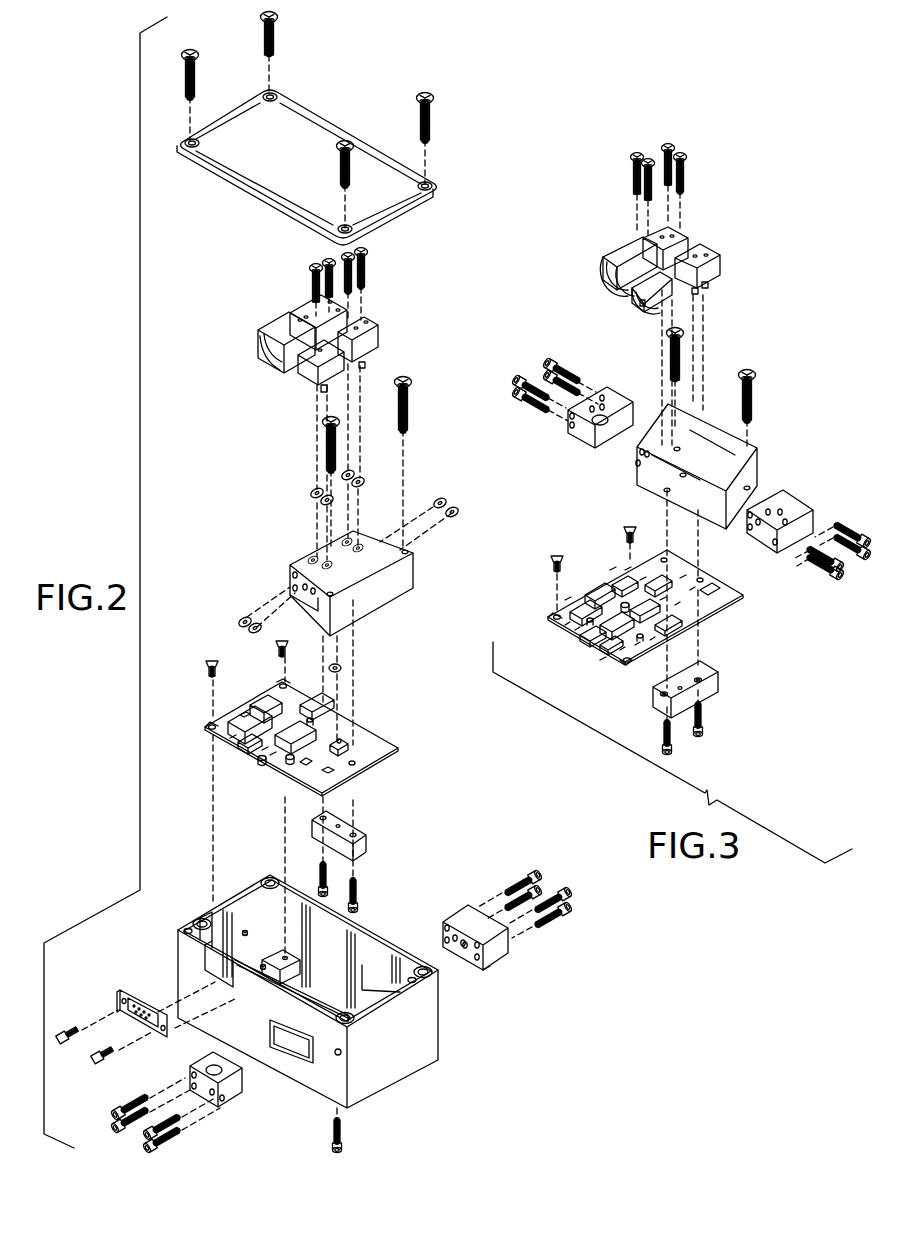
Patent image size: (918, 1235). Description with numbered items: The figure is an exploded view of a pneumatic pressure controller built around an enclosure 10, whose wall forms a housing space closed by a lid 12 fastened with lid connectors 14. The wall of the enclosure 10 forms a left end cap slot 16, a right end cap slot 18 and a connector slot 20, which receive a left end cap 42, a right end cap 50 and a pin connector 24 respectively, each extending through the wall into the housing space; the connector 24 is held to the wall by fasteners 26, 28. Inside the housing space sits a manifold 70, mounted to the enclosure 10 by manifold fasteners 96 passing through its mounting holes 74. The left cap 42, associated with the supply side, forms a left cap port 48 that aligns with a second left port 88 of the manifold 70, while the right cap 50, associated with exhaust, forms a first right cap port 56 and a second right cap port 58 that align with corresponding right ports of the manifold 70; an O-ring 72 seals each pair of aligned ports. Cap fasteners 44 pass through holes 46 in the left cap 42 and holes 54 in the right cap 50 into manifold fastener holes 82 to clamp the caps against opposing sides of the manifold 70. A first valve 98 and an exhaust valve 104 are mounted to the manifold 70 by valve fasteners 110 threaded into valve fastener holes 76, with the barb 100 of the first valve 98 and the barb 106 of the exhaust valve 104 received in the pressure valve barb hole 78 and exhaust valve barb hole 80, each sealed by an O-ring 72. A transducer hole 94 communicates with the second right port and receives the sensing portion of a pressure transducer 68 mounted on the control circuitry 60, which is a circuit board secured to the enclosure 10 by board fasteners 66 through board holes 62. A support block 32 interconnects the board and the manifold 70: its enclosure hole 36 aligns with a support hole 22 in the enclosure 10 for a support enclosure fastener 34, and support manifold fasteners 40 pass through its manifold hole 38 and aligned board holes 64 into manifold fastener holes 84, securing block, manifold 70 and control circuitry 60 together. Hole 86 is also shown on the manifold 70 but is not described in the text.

In FIG. 2, the enclosure 10 is at (308, 991).
In FIG. 2, the lid 12 is at (295, 103).
In FIG. 2, the lid connectors 14 is at (276, 42).
In FIG. 2, the left end cap slot 16 is at (300, 1057).
In FIG. 2, the right end cap slot 18 is at (362, 976).
In FIG. 2, the connector slot 20 is at (236, 985).
In FIG. 2, the support hole 22 is at (344, 1052).
In FIG. 2, the pin connector 24 is at (128, 1023).
In FIG. 2, the fasteners 26 is at (59, 1030).
In FIG. 2, the fasteners 28 is at (222, 912).
In FIG. 2, the support block 32 is at (336, 827).
In FIG. 3, the support block 32 is at (688, 691).
In FIG. 2, the support enclosure fastener 34 is at (343, 1145).
In FIG. 2, the enclosure hole 36 is at (340, 825).
In FIG. 3, the enclosure hole 36 is at (658, 694).
In FIG. 2, the manifold hole 38 is at (318, 820).
In FIG. 3, the manifold hole 38 is at (702, 681).
In FIG. 2, the support manifold fasteners 40 is at (358, 893).
In FIG. 3, the support manifold fasteners 40 is at (704, 734).
In FIG. 2, the left end cap 42 is at (211, 1080).
In FIG. 3, the left end cap 42 is at (582, 419).
In FIG. 2, the cap fasteners 44 is at (138, 1104).
In FIG. 3, the cap fasteners 44 is at (566, 372).
In FIG. 2, the holes 46 is at (192, 1078).
In FIG. 3, the holes 46 is at (570, 418).
In FIG. 2, the left cap port 48 is at (212, 1066).
In FIG. 3, the left cap port 48 is at (608, 412).
In FIG. 2, the right end cap 50 is at (477, 947).
In FIG. 3, the right end cap 50 is at (795, 522).
In FIG. 2, the holes 54 is at (486, 968).
In FIG. 2, the first right cap port 56 is at (467, 948).
In FIG. 3, the first right cap port 56 is at (770, 546).
In FIG. 2, the second right cap port 58 is at (446, 928).
In FIG. 3, the second right cap port 58 is at (752, 515).
In FIG. 2, the control circuitry 60 is at (294, 728).
In FIG. 3, the control circuitry 60 is at (642, 607).
In FIG. 2, the board holes 62 is at (279, 684).
In FIG. 3, the board holes 62 is at (553, 620).
In FIG. 2, the board holes 64 is at (356, 765).
In FIG. 3, the board holes 64 is at (667, 560).
In FIG. 2, the board fasteners 66 is at (180, 660).
In FIG. 3, the board fasteners 66 is at (525, 577).
In FIG. 2, the pressure transducer 68 is at (340, 752).
In FIG. 2, the manifold 70 is at (355, 621).
In FIG. 3, the manifold 70 is at (683, 466).
In FIG. 2, the O-ring 72 is at (312, 493).
In FIG. 2, the mounting holes 74 is at (412, 556).
In FIG. 3, the mounting holes 74 is at (680, 450).
In FIG. 2, the valve fastener holes 76 is at (352, 538).
In FIG. 2, the pressure valve barb hole 78 is at (311, 555).
In FIG. 2, the exhaust valve barb hole 80 is at (360, 552).
In FIG. 2, the manifold fastener holes 82 is at (292, 572).
In FIG. 3, the manifold fastener holes 82 is at (640, 452).
In FIG. 3, the manifold fastener holes 84 is at (665, 492).
In FIG. 2, the hole 86 is at (292, 588).
In FIG. 2, the second left port 88 is at (305, 594).
In FIG. 3, the transducer hole 94 is at (680, 476).
In FIG. 2, the manifold fasteners 96 is at (408, 404).
In FIG. 3, the manifold fasteners 96 is at (670, 355).
In FIG. 2, the first valve 98 is at (268, 324).
In FIG. 3, the first valve 98 is at (616, 250).
In FIG. 2, the barb 100 is at (320, 388).
In FIG. 3, the barb 100 is at (633, 305).
In FIG. 2, the exhaust valve 104 is at (300, 306).
In FIG. 3, the exhaust valve 104 is at (690, 241).
In FIG. 2, the barb 106 is at (368, 363).
In FIG. 3, the barb 106 is at (716, 278).
In FIG. 2, the valve fasteners 110 is at (366, 268).
In FIG. 3, the valve fasteners 110 is at (684, 170).